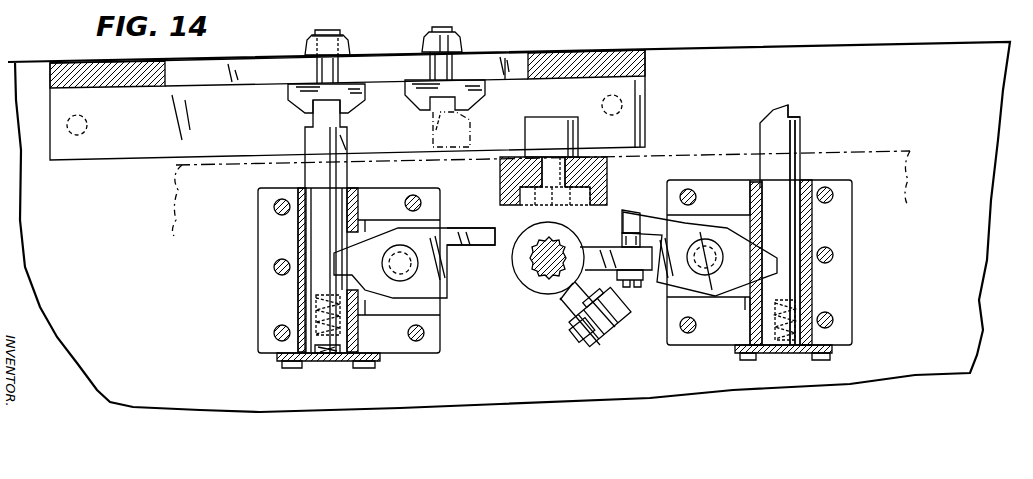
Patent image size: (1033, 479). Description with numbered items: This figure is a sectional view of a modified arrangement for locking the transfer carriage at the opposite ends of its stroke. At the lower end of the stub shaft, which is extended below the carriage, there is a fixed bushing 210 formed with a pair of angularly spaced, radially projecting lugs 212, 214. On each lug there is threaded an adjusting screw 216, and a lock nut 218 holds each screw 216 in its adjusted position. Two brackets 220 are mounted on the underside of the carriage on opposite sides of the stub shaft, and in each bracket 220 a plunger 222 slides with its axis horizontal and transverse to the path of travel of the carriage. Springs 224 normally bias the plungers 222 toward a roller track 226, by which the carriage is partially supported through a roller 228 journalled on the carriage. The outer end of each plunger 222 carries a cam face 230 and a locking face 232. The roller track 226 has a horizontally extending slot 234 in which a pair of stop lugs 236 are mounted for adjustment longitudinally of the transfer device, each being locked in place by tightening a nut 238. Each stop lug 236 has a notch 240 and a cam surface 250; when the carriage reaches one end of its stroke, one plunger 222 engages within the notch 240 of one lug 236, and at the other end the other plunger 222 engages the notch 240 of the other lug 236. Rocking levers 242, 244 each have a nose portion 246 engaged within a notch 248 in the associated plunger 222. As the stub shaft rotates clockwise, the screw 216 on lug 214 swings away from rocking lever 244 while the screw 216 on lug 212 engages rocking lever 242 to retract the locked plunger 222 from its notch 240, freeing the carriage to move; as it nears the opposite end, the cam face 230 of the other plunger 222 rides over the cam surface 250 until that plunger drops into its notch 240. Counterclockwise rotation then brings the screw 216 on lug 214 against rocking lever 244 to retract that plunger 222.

The fixed bushing 210 is at (543, 286).
The lug 212 is at (576, 304).
The lug 214 is at (600, 247).
The adjusting screw 216 is at (630, 212).
The lock nut 218 is at (622, 322).
The bracket 220 is at (260, 241).
The plunger 222 is at (803, 140).
The spring 224 is at (332, 362).
The roller track 226 is at (600, 50).
The roller 228 is at (580, 135).
The cam face 230 is at (768, 115).
The locking face 232 is at (792, 112).
The slot 234 is at (505, 55).
The stop lug 236 is at (328, 32).
The nut 238 is at (352, 45).
The notch 240 is at (290, 92).
The rocking lever 242 is at (452, 228).
The rocking lever 244 is at (700, 236).
The nose portion 246 is at (548, 263).
The notch 248 is at (325, 215).
The cam surface 250 is at (488, 108).